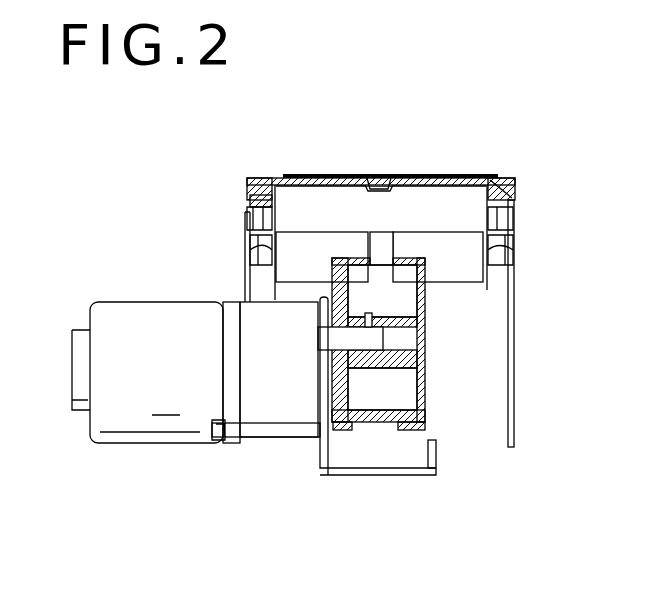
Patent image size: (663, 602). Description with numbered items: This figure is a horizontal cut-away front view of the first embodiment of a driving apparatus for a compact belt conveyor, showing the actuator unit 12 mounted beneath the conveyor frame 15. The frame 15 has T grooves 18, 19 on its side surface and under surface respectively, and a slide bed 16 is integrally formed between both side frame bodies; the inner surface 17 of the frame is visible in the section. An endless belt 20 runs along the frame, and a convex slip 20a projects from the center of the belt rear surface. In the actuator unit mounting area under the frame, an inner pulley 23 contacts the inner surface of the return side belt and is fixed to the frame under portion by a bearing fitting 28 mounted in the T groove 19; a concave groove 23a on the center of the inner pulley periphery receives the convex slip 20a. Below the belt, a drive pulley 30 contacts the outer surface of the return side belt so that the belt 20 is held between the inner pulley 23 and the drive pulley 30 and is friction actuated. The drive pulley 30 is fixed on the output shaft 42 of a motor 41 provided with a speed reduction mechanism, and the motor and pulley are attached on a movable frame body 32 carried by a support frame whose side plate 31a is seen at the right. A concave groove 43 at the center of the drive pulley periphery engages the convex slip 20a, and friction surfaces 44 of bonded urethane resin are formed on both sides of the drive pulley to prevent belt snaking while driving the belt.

The actuator unit 12 is at (290, 455).
The frame 15 is at (265, 180).
The slide bed 16 is at (435, 178).
The inner surface 17 is at (420, 188).
The T groove 18 is at (248, 196).
The T groove 19 is at (247, 218).
The endless belt 20 is at (322, 175).
The convex slip 20a is at (378, 178).
The inner pulley 23 is at (455, 275).
The concave groove 23a is at (376, 232).
The bearing fitting 28 is at (248, 252).
The drive pulley 30 is at (425, 412).
The side plate 31a is at (514, 352).
The movable frame body 32 is at (432, 474).
The motor 41 is at (118, 312).
The output shaft 42 is at (375, 338).
The concave groove 43 is at (385, 432).
The friction surface 44 is at (347, 432).